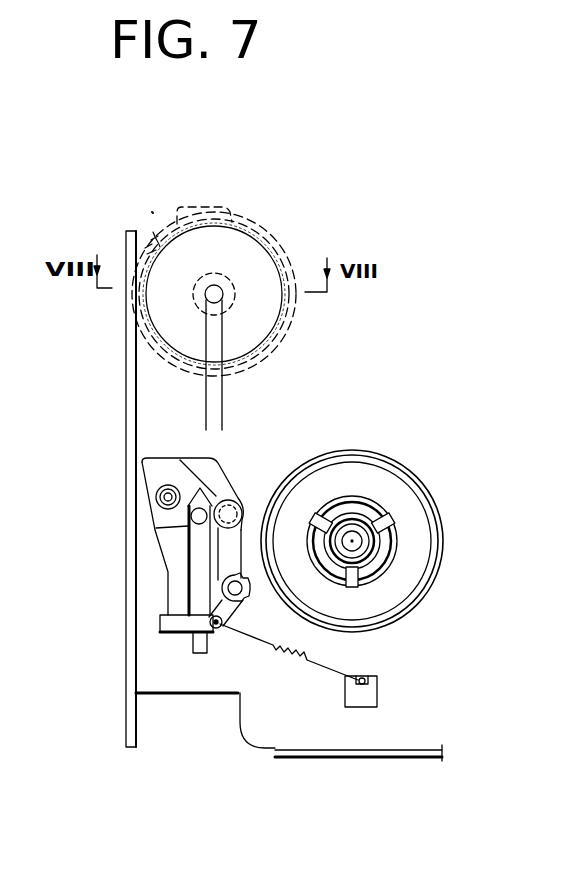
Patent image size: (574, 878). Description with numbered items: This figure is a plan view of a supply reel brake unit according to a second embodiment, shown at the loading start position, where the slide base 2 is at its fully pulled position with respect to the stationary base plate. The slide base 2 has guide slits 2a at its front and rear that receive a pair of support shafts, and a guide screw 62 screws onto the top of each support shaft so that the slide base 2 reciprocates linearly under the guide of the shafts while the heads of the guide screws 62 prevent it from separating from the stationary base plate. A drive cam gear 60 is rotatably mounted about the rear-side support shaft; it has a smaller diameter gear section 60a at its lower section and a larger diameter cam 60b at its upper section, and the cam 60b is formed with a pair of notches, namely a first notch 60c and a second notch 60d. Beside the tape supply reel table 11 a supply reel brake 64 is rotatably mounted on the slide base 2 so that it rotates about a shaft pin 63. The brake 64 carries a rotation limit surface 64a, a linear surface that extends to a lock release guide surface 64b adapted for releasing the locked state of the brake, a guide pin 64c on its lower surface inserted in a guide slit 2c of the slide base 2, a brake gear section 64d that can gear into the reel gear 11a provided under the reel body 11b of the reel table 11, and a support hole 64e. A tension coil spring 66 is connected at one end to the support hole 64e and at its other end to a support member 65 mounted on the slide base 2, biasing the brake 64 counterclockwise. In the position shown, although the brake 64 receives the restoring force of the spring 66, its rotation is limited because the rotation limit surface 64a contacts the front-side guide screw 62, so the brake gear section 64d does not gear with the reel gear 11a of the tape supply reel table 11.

The slide base 2 is at (395, 760).
The guide slit 2a is at (206, 405).
The guide slit 2c is at (233, 497).
The tape supply reel table 11 is at (410, 460).
The reel gear 11a is at (413, 611).
The reel body 11b is at (396, 546).
The drive cam gear 60 is at (286, 238).
The smaller diameter gear section 60a is at (280, 335).
The larger diameter cam 60b is at (296, 315).
The first notch 60c is at (243, 226).
The second notch 60d is at (160, 243).
The guide screw 62 is at (212, 297).
The shaft pin 63 is at (156, 497).
The supply reel brake 64 is at (152, 507).
The rotation limit surface 64a is at (188, 569).
The lock release guide surface 64b is at (158, 612).
The guide pin 64c is at (172, 458).
The brake gear section 64d is at (257, 600).
The support hole 64e is at (217, 628).
The support member 65 is at (362, 690).
The tension coil spring 66 is at (311, 664).